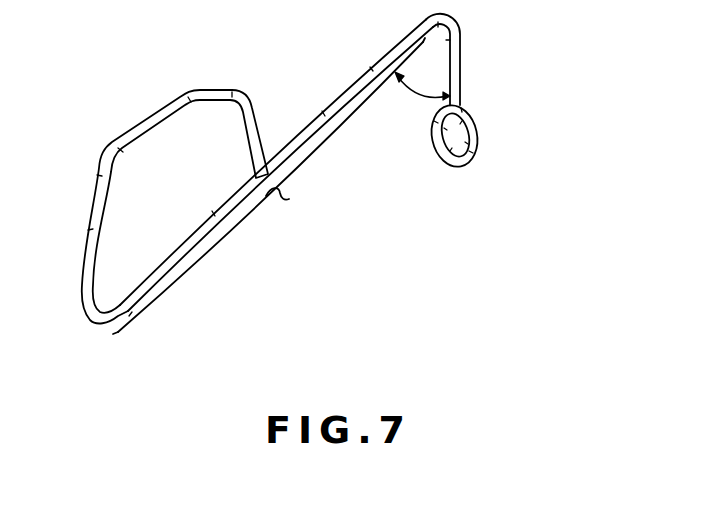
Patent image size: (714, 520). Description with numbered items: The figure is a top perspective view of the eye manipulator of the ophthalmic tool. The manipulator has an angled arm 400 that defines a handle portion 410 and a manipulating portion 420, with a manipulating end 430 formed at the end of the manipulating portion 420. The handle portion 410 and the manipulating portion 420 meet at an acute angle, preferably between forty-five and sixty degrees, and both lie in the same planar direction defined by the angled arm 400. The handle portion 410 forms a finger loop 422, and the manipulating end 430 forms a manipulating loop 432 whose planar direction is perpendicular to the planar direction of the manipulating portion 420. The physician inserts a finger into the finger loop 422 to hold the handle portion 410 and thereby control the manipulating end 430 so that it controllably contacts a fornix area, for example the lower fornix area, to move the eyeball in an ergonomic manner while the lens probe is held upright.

The angled arm 400 is at (573, 46).
The handle portion 410 is at (273, 177).
The manipulating portion 420 is at (471, 18).
The finger loop 422 is at (142, 122).
The manipulating end 430 is at (470, 107).
The manipulating loop 432 is at (465, 168).